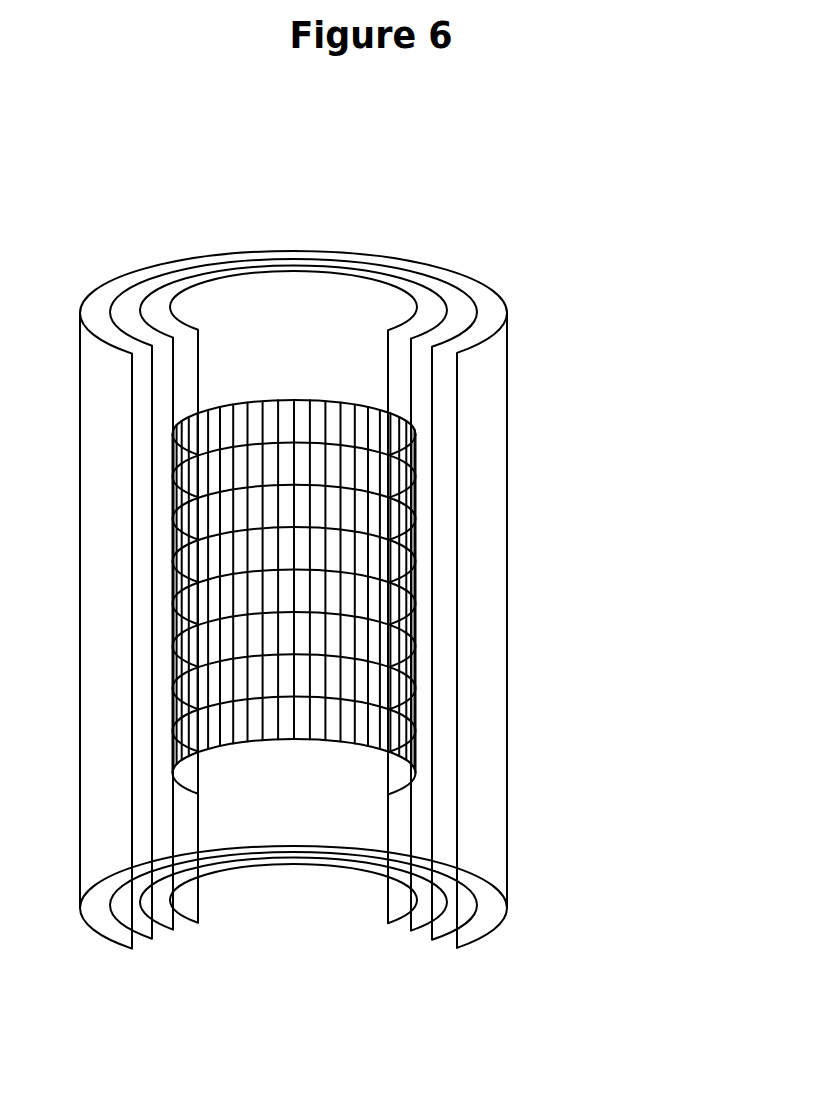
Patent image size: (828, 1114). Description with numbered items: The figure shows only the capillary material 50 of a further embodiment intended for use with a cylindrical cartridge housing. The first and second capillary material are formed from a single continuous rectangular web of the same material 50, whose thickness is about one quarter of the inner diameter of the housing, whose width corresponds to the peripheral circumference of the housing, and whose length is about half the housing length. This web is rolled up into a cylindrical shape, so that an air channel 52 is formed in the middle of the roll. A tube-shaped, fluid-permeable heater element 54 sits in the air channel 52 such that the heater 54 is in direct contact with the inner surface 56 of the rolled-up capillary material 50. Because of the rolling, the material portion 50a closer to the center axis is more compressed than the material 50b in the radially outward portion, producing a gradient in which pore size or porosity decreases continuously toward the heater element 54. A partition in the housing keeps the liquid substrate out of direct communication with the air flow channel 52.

The capillary material 50 is at (370, 556).
The material portion closer to the center axis 50a is at (193, 290).
The material in the radially outward located portion 50b is at (507, 305).
The air channel 52 is at (298, 892).
The tube shaped fluid permeable heater element 54 is at (303, 455).
The inner surface of the rolled-up capillary material 56 is at (330, 322).